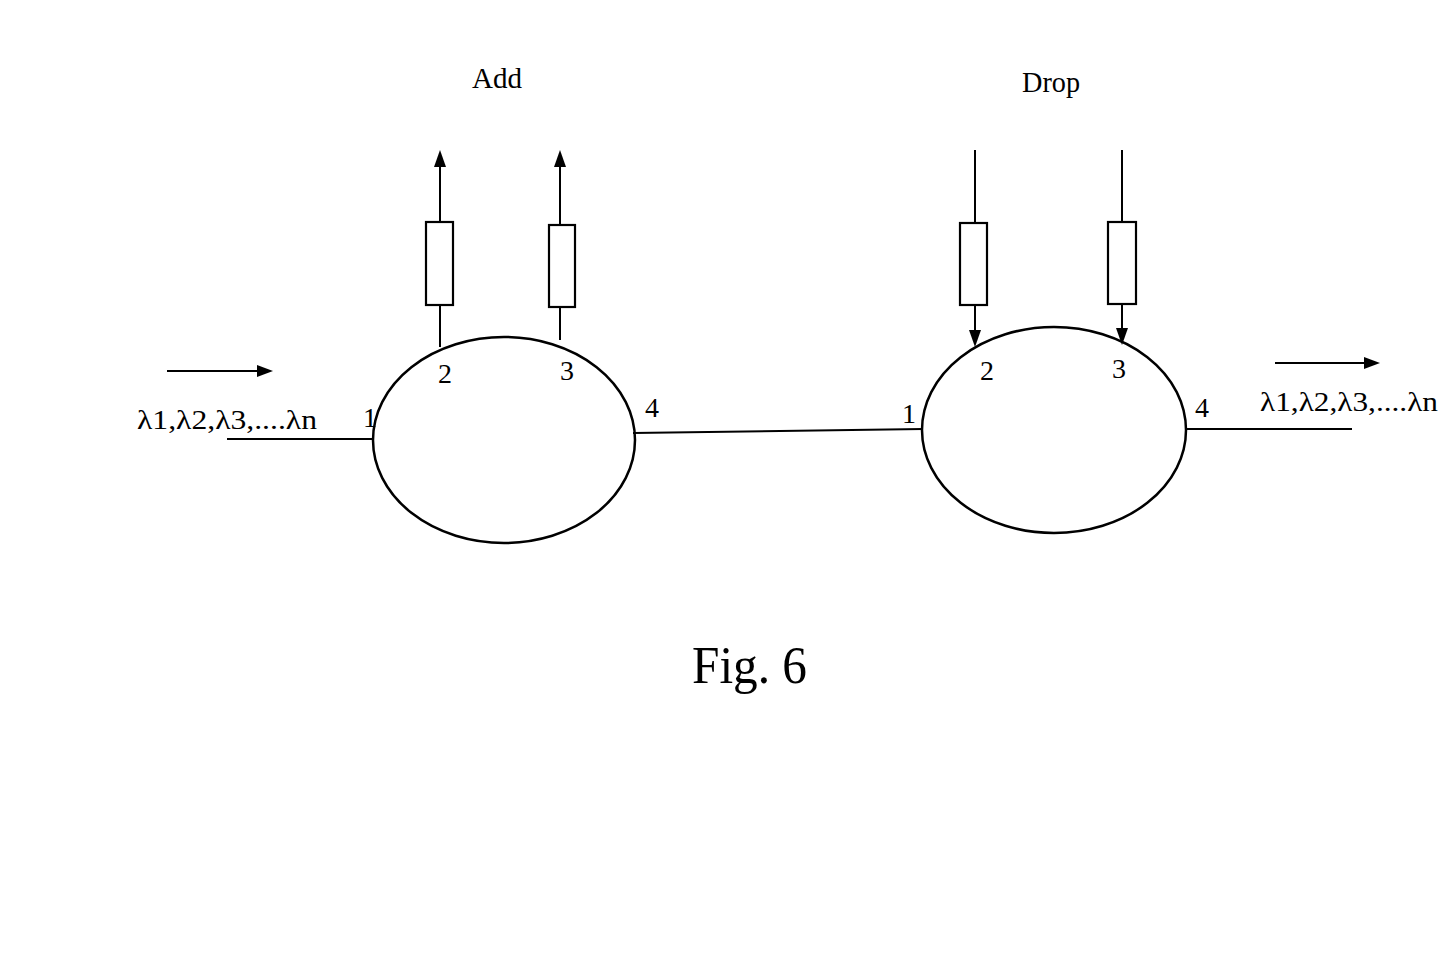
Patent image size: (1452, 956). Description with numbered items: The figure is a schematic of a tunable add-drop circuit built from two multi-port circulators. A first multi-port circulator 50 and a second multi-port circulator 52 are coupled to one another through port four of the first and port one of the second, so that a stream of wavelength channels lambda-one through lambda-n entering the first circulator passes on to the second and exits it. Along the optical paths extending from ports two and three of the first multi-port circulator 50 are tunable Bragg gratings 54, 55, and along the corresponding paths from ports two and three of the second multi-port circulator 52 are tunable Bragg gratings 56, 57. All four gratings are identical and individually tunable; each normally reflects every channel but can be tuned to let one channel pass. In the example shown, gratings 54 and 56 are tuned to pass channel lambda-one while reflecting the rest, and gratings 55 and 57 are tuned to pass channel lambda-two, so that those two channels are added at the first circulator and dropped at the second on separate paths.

The first multi-port circulator 50 is at (433, 527).
The second multi-port circulator 52 is at (1002, 527).
The tunable Bragg grating 54 is at (426, 262).
The tunable Bragg grating 55 is at (549, 252).
The tunable Bragg grating 56 is at (960, 242).
The tunable Bragg grating 57 is at (1108, 257).